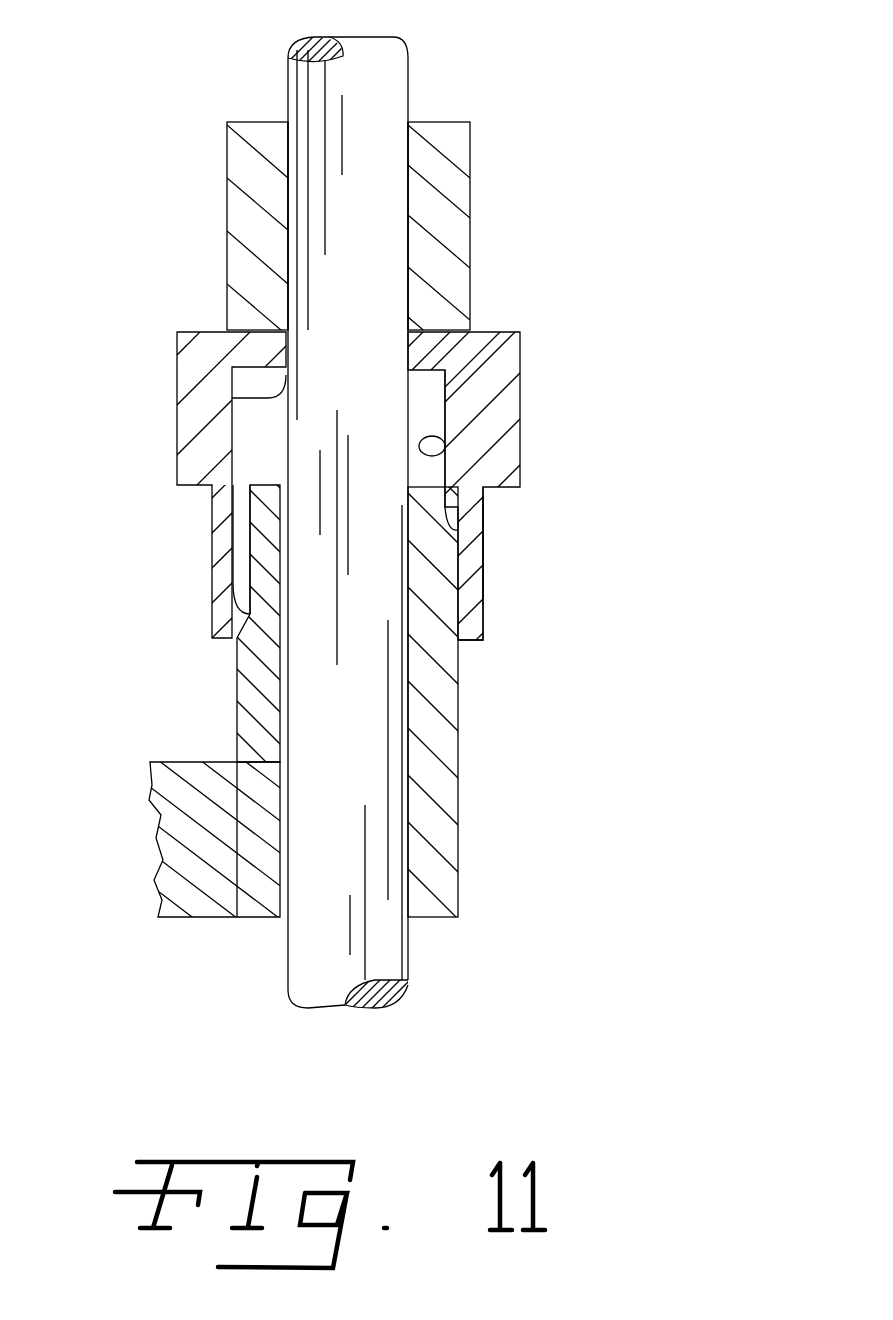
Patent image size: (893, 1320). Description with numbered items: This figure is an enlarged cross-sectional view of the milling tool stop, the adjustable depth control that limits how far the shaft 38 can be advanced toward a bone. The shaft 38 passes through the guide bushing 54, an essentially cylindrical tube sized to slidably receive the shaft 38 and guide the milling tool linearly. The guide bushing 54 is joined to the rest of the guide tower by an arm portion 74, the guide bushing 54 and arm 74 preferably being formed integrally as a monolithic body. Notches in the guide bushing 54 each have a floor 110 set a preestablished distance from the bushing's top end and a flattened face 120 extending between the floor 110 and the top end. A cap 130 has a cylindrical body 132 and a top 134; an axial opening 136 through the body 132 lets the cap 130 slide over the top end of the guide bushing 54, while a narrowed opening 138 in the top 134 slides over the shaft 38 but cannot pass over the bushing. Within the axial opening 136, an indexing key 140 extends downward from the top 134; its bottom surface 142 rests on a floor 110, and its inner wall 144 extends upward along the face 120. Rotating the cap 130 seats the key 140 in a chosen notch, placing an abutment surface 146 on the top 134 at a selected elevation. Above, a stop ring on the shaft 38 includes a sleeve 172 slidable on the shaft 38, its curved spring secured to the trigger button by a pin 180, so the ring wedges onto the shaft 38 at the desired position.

The shaft 38 is at (406, 509).
The guide bushing 54 is at (446, 700).
The arm portion 74 is at (184, 890).
The floor 110 is at (155, 547).
The flattened face 120 is at (161, 549).
The cap 130 is at (446, 350).
The cylindrical body 132 is at (552, 563).
The top 134 is at (446, 350).
The axial opening 136 is at (170, 628).
The narrowed opening 138 is at (174, 410).
The indexing key 140 is at (378, 420).
The bottom surface 142 is at (572, 547).
The inner wall 144 is at (552, 443).
The abutment surface 146 is at (446, 350).
The sleeve 172 is at (434, 256).
The pin 180 is at (456, 196).